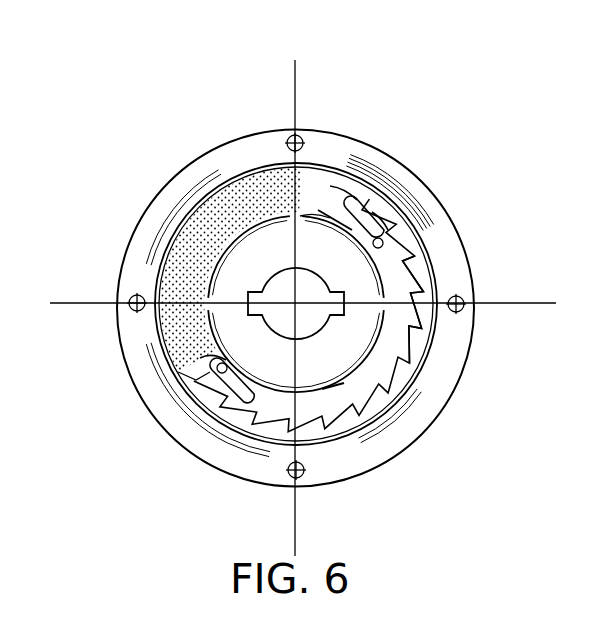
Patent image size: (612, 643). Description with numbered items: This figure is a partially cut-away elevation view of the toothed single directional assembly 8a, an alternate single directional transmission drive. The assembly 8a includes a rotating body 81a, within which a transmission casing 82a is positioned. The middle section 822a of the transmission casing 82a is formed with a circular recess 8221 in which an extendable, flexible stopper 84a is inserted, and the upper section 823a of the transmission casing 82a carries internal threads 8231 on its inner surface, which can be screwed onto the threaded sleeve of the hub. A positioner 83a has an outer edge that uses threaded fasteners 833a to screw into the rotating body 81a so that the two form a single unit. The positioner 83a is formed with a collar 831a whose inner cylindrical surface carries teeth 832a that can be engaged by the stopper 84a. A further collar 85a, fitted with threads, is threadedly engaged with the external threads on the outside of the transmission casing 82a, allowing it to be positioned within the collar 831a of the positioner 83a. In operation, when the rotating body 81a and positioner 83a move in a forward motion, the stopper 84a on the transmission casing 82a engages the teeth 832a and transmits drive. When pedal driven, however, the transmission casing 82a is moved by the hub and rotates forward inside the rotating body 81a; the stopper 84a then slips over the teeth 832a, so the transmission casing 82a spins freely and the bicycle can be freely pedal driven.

The toothed single directional assembly 8a is at (169, 84).
The rotating body 81a is at (328, 118).
The transmission casing 82a is at (378, 298).
The positioner 83a is at (241, 149).
The stopper 84a is at (361, 215).
The collar 85a is at (175, 287).
The collar 831a is at (172, 238).
The teeth 832a is at (357, 198).
The threaded fasteners 833a is at (305, 473).
The middle section of the transmission casing 822a is at (396, 284).
The upper section of the transmission casing 823a is at (400, 343).
The circular recess 8221 is at (334, 206).
The internal threads 8231 is at (334, 381).